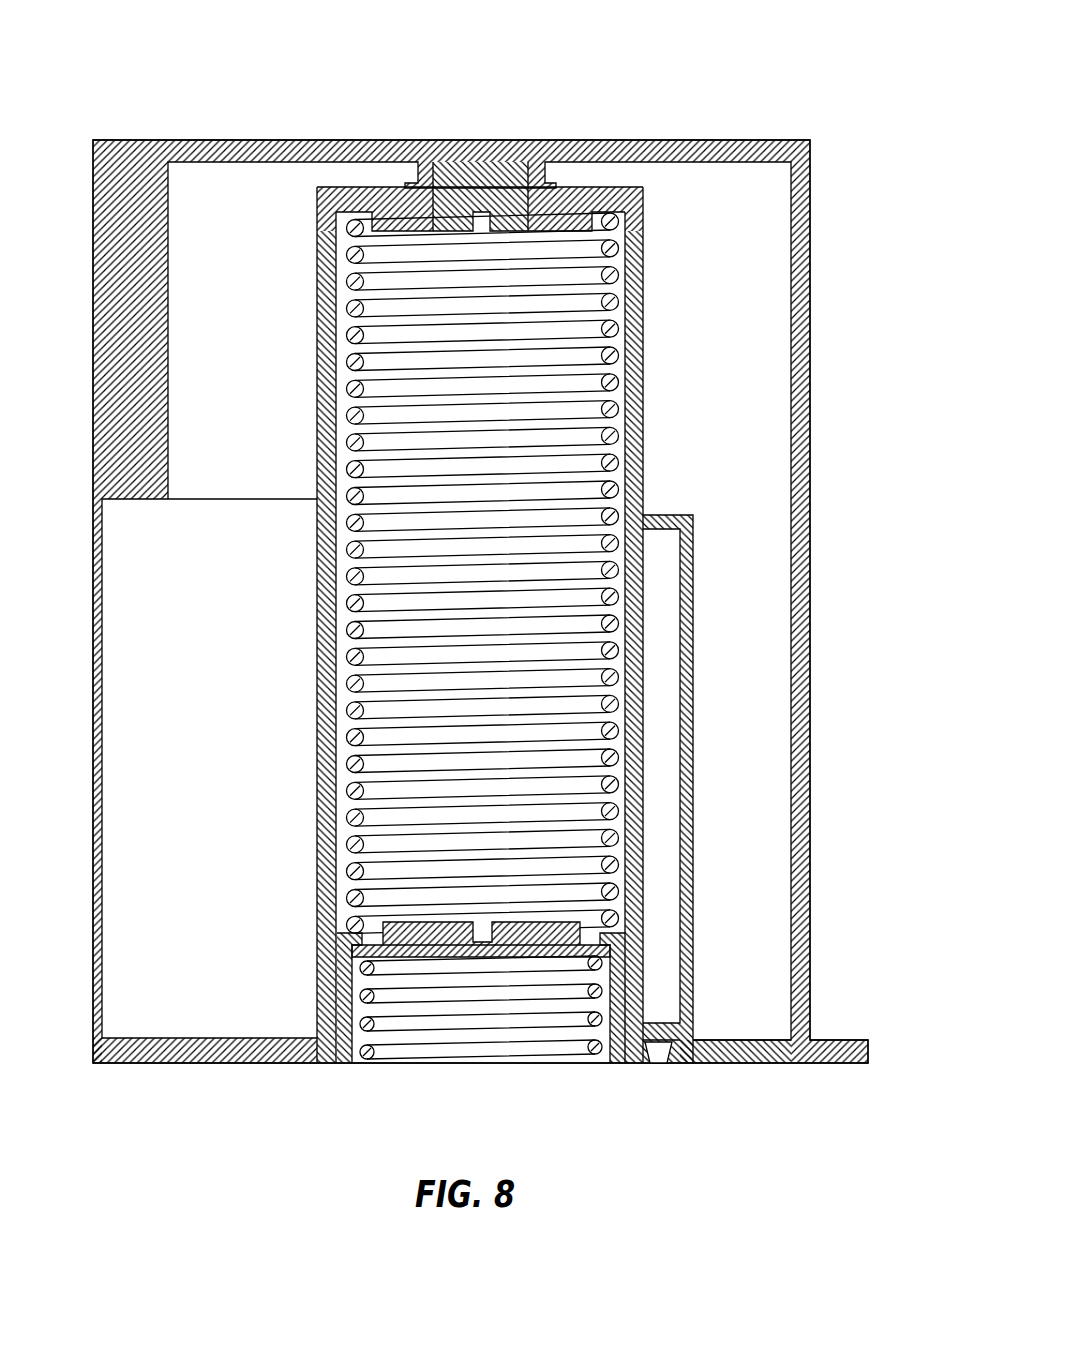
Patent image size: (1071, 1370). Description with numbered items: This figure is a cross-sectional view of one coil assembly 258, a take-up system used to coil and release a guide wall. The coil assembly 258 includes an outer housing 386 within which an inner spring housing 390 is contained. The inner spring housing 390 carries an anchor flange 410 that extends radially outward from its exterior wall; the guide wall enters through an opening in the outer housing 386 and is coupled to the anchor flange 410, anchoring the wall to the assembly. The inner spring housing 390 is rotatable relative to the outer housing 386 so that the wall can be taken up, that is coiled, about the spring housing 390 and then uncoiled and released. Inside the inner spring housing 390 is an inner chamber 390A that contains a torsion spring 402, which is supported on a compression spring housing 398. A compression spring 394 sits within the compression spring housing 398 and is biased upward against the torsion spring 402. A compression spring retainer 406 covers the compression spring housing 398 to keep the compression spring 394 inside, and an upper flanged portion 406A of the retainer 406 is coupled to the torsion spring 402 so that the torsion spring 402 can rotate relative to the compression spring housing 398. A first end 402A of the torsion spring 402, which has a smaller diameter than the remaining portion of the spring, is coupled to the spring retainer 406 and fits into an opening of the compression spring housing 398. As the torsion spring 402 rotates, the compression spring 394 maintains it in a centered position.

The coil assembly 258 is at (645, 75).
The outer housing 386 is at (106, 371).
The inner spring housing 390 is at (640, 290).
The inner chamber 390A is at (618, 447).
The torsion spring 402 is at (606, 382).
The first end 402A is at (402, 914).
The compression spring retainer 406 is at (452, 947).
The upper flanged portion 406A is at (568, 925).
The compression spring housing 398 is at (616, 1058).
The compression spring 394 is at (415, 1057).
The anchor flange 410 is at (697, 727).